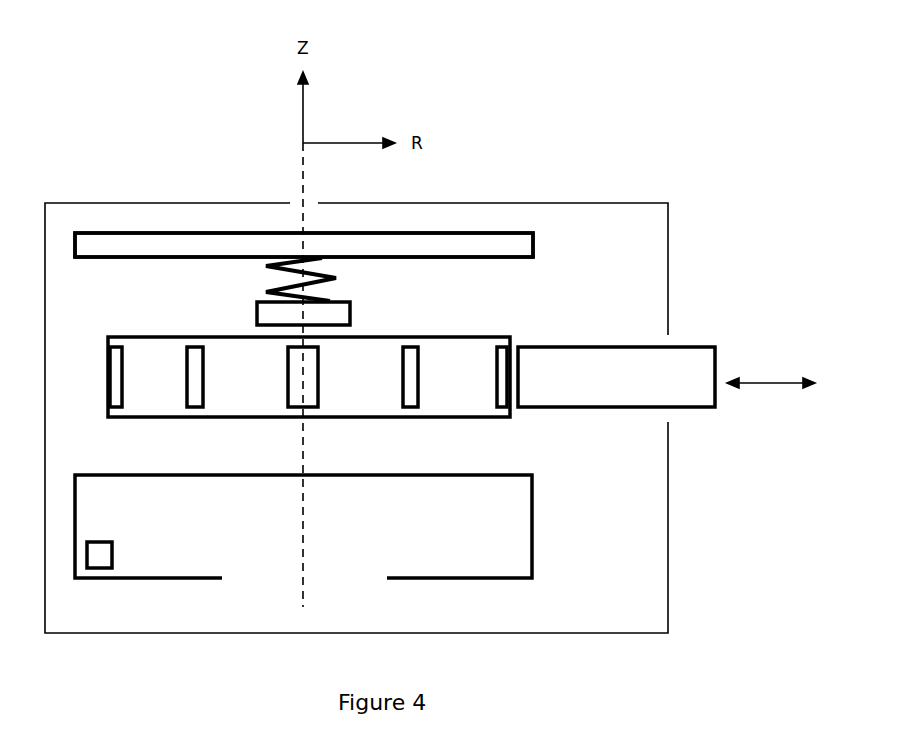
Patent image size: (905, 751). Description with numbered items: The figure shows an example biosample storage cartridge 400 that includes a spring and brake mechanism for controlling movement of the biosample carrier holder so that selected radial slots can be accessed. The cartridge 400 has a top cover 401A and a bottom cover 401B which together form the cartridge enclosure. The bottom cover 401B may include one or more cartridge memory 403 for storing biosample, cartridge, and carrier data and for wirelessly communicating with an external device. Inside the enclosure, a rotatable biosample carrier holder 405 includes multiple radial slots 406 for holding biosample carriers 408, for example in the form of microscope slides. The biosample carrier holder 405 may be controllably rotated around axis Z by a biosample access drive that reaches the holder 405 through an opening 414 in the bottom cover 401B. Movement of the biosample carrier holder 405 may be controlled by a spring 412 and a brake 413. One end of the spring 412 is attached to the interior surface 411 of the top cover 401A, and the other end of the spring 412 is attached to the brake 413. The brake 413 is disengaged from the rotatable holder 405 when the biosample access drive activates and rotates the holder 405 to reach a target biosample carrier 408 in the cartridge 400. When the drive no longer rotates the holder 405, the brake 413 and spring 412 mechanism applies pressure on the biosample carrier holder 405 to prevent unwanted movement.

The biosample storage cartridge 400 is at (356, 418).
The top cover 401A is at (533, 245).
The bottom cover 401B is at (303, 526).
The cartridge memory 403 is at (97, 568).
The rotatable biosample carrier holder 405 is at (276, 420).
The radial slots 406 is at (413, 408).
The biosample carrier 408 is at (666, 377).
The interior surface 411 is at (185, 256).
The spring 412 is at (336, 278).
The brake 413 is at (257, 313).
The opening 414 is at (262, 597).